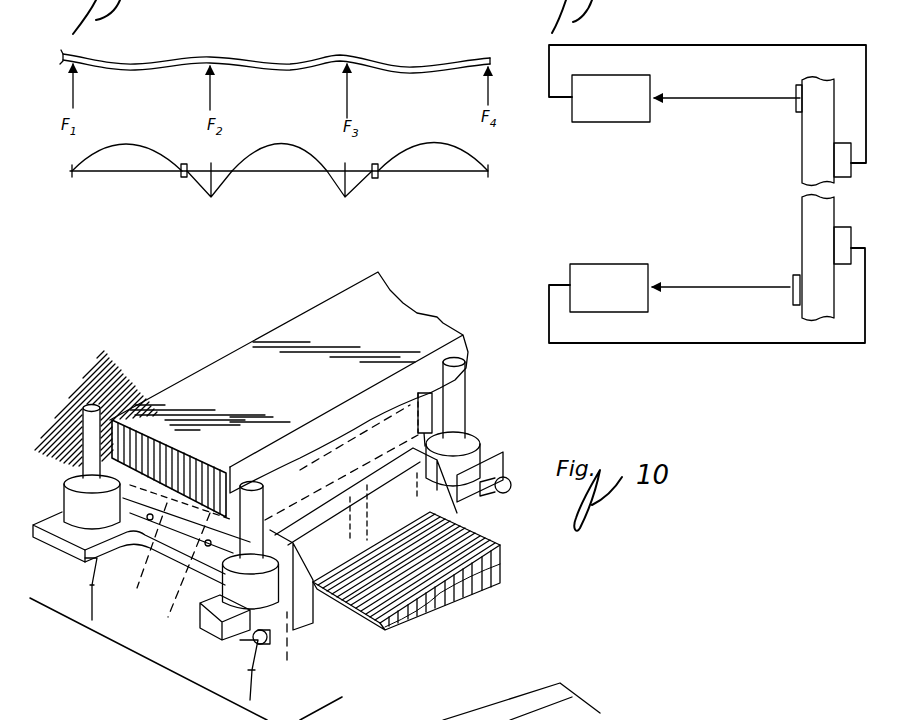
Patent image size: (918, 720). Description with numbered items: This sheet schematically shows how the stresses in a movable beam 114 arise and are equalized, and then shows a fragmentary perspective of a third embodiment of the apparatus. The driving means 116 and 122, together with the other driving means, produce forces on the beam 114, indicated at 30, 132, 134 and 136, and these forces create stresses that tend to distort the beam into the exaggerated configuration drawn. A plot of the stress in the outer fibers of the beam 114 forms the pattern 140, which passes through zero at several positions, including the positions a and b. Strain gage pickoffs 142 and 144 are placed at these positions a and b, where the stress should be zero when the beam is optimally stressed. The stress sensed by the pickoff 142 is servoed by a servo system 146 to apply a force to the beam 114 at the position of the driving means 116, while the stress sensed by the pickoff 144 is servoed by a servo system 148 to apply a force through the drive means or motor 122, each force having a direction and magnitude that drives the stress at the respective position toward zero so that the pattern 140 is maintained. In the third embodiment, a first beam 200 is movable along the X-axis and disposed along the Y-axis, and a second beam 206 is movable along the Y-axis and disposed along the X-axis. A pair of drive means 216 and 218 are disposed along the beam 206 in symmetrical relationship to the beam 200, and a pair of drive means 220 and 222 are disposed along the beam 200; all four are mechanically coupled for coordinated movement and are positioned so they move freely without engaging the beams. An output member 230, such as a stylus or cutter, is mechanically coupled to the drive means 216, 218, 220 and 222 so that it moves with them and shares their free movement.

In FIG. 8, the first support roll force point 30 is at (72, 99).
In FIG. 8, the beam 114 is at (387, 63).
In FIG. 9, the beam 114 is at (800, 181).
In FIG. 10, the beam 114 is at (130, 434).
In FIG. 9, the driving means 116 is at (851, 178).
In FIG. 9, the driving means 122 is at (861, 228).
In FIG. 8, the force 132 is at (209, 100).
In FIG. 8, the force 134 is at (347, 100).
In FIG. 8, the force 136 is at (485, 94).
In FIG. 8, the stress pattern 140 is at (395, 160).
In FIG. 8, the strain gage pickoff 142 is at (184, 177).
In FIG. 9, the strain gage pickoff 142 is at (797, 114).
In FIG. 8, the strain gage pickoff 144 is at (374, 178).
In FIG. 9, the strain gage pickoff 144 is at (793, 279).
In FIG. 9, the servo system 146 is at (622, 122).
In FIG. 9, the servo system 148 is at (622, 263).
In FIG. 10, the first beam 200 is at (503, 564).
In FIG. 10, the second beam 206 is at (406, 300).
In FIG. 10, the drive means 216 is at (141, 552).
In FIG. 10, the drive means 218 is at (183, 575).
In FIG. 10, the drive means 220 is at (355, 574).
In FIG. 10, the drive means 222 is at (480, 468).
In FIG. 10, the output member 230 is at (240, 688).